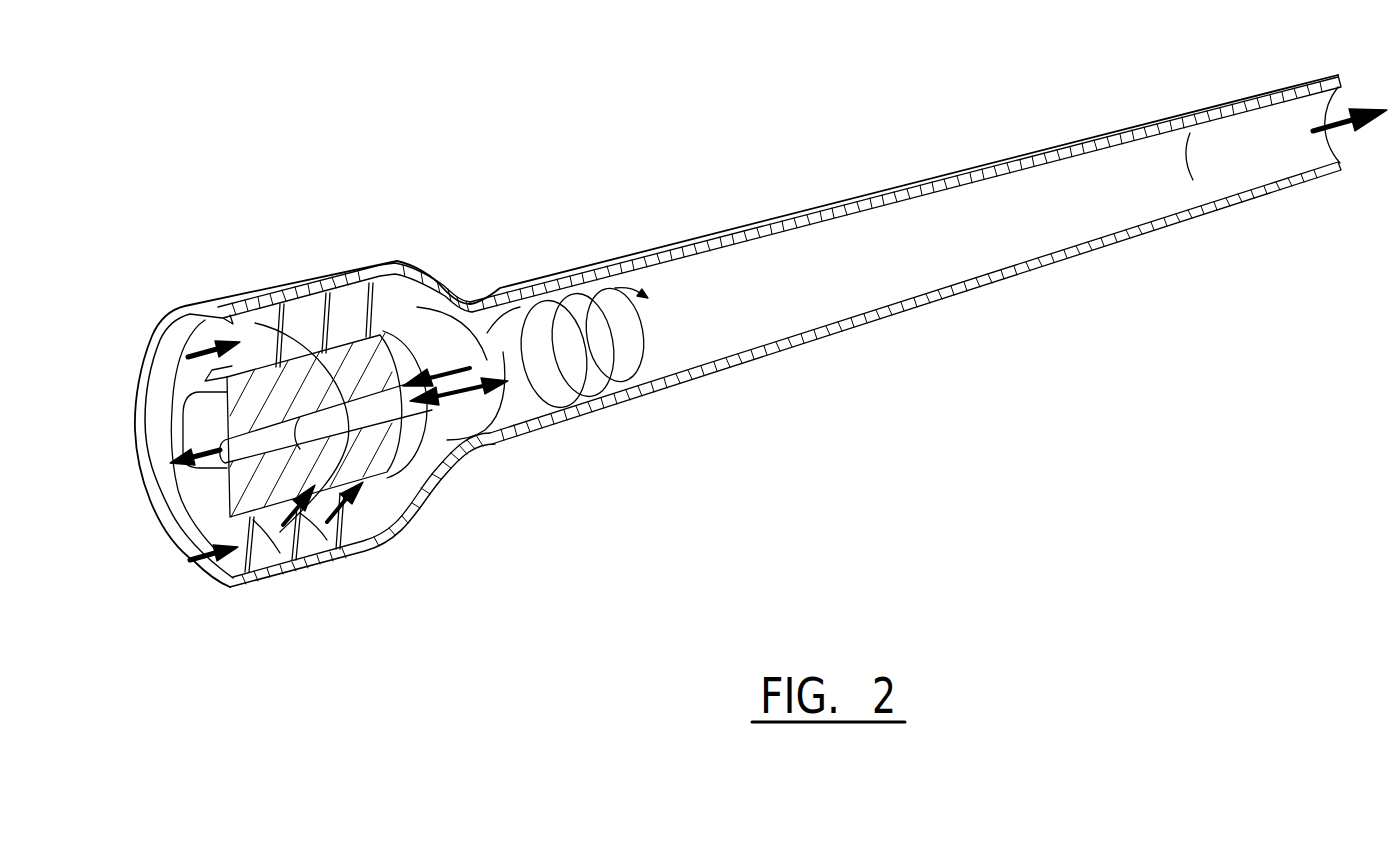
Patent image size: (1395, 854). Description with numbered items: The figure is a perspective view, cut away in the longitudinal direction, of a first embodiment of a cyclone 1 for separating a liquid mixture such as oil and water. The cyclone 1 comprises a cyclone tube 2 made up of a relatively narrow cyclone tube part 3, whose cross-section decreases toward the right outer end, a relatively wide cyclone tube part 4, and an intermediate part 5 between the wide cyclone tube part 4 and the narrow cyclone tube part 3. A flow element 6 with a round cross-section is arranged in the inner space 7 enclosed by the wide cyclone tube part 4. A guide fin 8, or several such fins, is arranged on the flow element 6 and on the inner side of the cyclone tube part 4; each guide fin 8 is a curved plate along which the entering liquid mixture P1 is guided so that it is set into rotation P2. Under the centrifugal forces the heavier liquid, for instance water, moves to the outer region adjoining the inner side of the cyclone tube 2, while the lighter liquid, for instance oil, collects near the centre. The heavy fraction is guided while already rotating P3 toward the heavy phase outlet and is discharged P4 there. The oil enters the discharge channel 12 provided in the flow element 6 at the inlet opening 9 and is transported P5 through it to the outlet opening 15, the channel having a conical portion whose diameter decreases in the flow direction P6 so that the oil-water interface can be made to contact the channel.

The cyclone 1 is at (839, 126).
The cyclone tube 2 is at (585, 245).
The cyclone tube part 3 is at (1066, 160).
The cyclone tube part 4 is at (298, 285).
The intermediate part 5 is at (431, 282).
The flow element 6 is at (237, 487).
The inner space 7 is at (528, 318).
The guide fin 8 is at (294, 556).
The inlet opening 9 is at (573, 396).
The discharge channel 12 is at (267, 450).
The outlet opening 15 is at (210, 396).
The liquid mixture P1 is at (195, 560).
The rotation P2 is at (421, 397).
The rotating heavy fraction flow P3 is at (649, 311).
The heavy fraction discharge P4 is at (1350, 102).
The light fraction flow P5 is at (497, 367).
The flow direction P6 is at (195, 441).